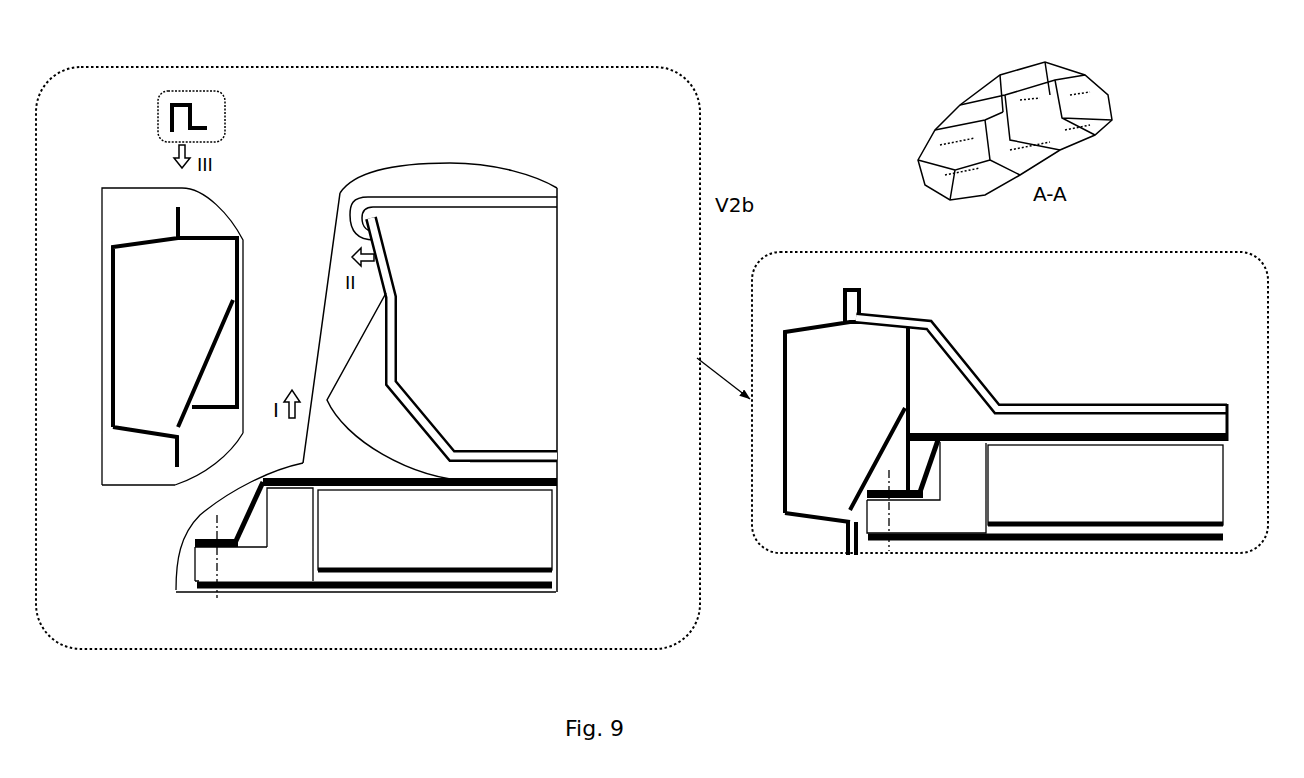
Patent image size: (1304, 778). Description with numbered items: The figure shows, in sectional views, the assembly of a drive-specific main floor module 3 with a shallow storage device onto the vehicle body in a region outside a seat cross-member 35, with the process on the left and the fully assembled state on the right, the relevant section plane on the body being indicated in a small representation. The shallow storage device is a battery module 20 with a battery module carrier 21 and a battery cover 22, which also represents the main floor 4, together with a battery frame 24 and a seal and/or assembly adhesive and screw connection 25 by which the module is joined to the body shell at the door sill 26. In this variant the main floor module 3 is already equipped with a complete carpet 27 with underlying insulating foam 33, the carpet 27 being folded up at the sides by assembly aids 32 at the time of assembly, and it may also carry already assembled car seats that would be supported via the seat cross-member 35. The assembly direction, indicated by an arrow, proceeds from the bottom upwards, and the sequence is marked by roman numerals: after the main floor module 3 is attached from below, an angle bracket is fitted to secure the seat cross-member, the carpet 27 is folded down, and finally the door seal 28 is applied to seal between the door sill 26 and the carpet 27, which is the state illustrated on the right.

The main floor module 3 is at (446, 167).
The main floor 4 is at (363, 479).
The battery module 20 is at (435, 530).
The battery module carrier 21 is at (418, 577).
The battery cover 22 is at (363, 479).
The battery frame 24 is at (277, 561).
The seal and/or assembly adhesive and screw connection 25 is at (209, 538).
The door sill 26 is at (131, 188).
The carpet 27 is at (373, 411).
The door seal 28 is at (233, 117).
The assembly aid 32 is at (511, 198).
The insulating foam 33 is at (560, 462).
The seat cross-member 35 is at (560, 477).